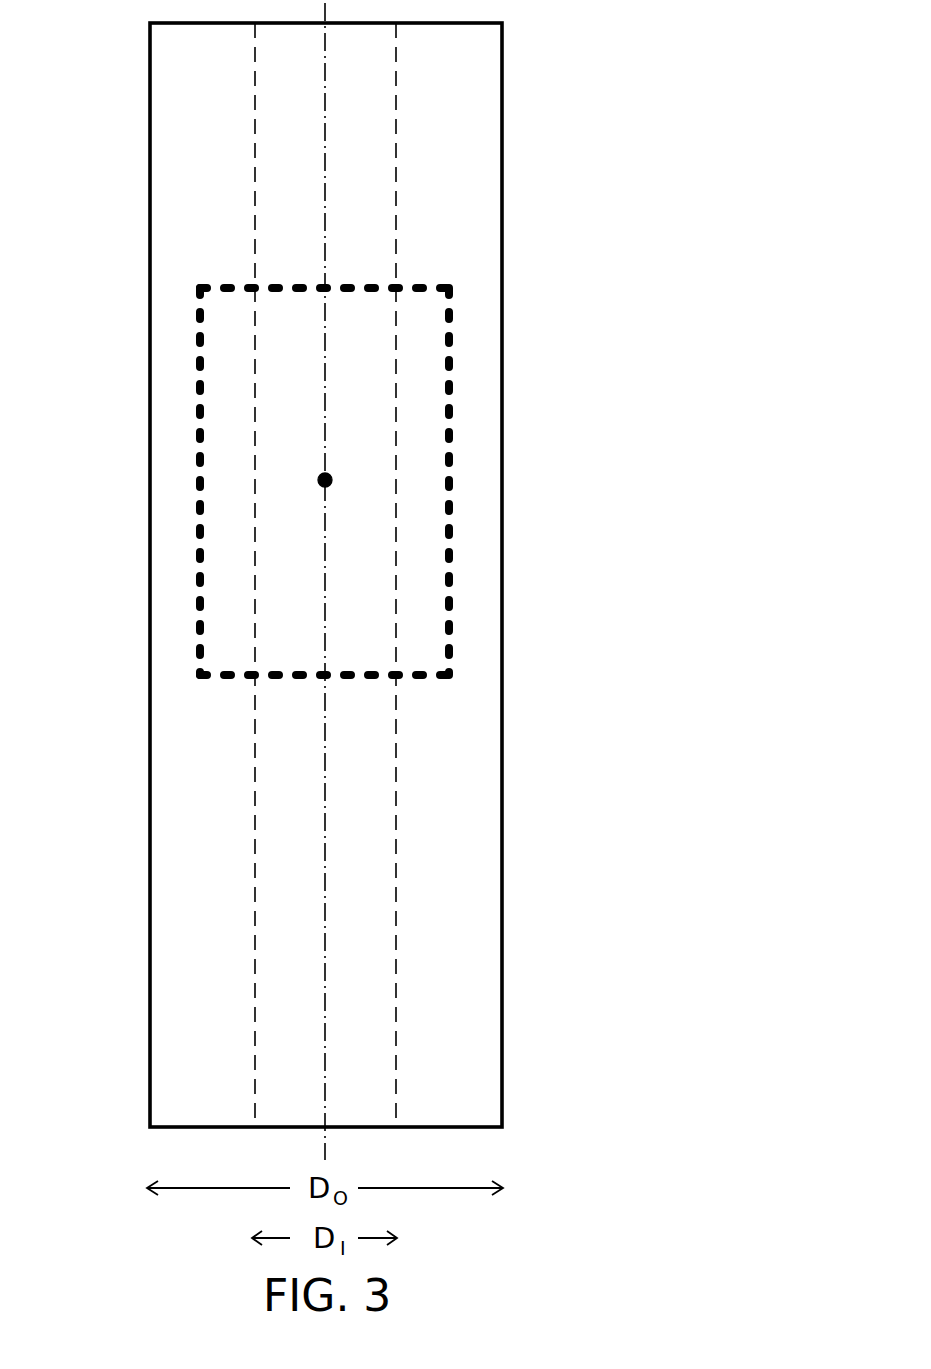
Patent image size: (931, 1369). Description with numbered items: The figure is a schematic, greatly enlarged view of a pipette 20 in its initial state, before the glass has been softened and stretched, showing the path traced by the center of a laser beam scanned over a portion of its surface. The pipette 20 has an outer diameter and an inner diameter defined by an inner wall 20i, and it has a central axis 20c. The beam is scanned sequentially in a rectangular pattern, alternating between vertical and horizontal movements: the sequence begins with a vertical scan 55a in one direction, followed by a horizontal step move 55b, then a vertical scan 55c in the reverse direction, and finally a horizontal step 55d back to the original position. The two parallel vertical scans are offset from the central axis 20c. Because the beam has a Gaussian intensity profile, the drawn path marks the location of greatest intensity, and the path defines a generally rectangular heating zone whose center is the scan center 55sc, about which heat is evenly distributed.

The pipette 20 is at (503, 718).
The inner wall 20i is at (397, 782).
The central axis 20c is at (325, 845).
The vertical scan 55a is at (200, 412).
The horizontal step move 55b is at (373, 288).
The vertical scan 55c is at (450, 588).
The horizontal step 55d is at (268, 675).
The scan center 55sc is at (332, 478).